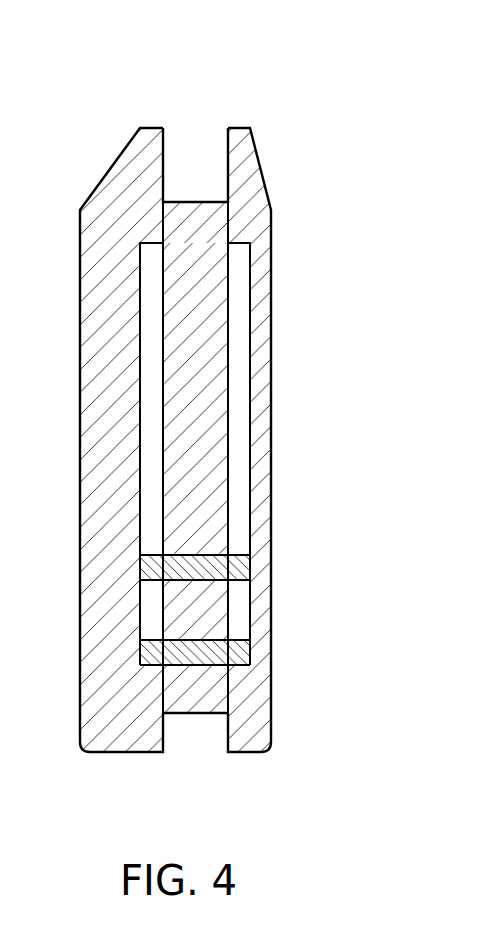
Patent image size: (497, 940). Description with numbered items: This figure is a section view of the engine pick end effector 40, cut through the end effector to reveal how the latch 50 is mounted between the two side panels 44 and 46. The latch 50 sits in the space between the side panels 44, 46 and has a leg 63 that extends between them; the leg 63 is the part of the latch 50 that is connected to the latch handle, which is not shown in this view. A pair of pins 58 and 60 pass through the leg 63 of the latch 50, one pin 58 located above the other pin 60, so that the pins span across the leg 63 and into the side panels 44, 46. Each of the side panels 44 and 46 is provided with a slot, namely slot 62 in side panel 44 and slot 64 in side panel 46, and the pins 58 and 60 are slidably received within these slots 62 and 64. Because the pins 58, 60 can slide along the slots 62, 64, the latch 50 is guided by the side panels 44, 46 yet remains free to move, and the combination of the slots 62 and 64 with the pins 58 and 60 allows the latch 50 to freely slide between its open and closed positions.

The engine pick end effector 40 is at (337, 128).
The side panel 44 is at (272, 473).
The side panel 46 is at (88, 435).
The latch 50 is at (218, 360).
The pin 58 is at (242, 565).
The pin 60 is at (152, 655).
The slot 62 is at (240, 427).
The leg 63 is at (218, 298).
The slot 64 is at (145, 472).